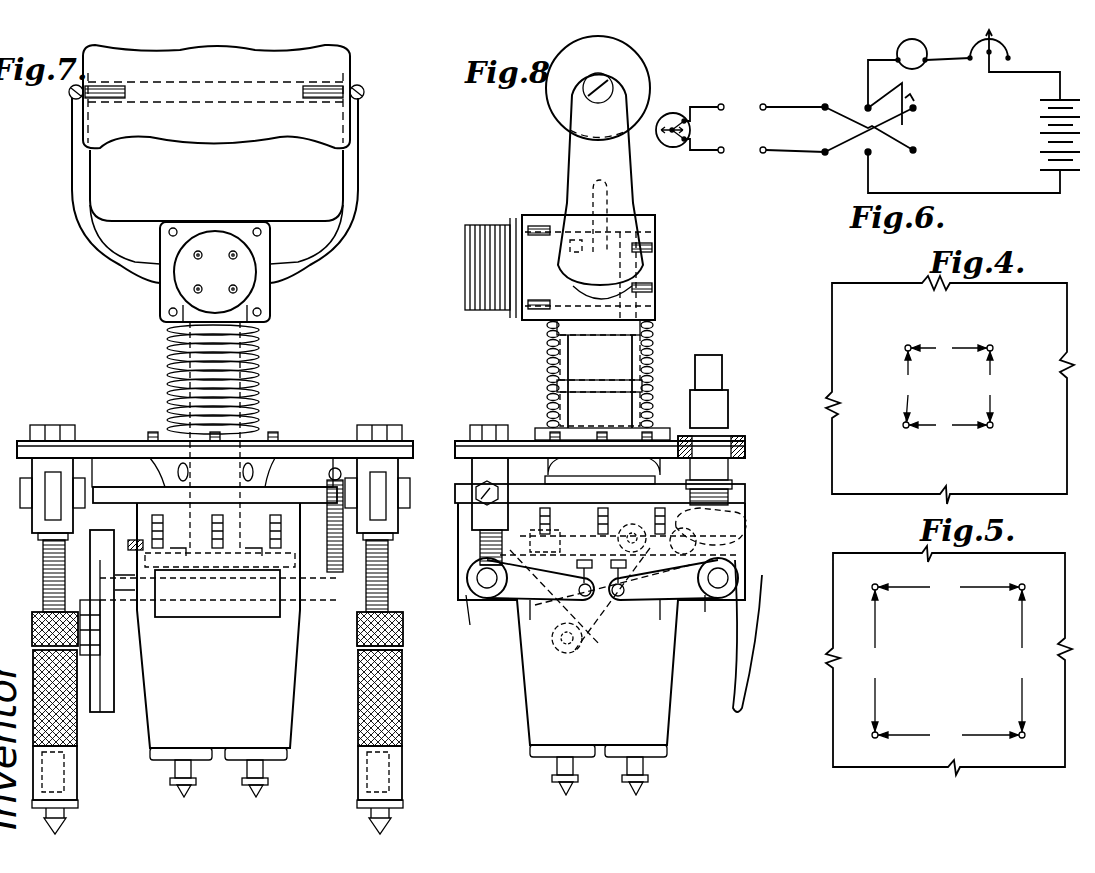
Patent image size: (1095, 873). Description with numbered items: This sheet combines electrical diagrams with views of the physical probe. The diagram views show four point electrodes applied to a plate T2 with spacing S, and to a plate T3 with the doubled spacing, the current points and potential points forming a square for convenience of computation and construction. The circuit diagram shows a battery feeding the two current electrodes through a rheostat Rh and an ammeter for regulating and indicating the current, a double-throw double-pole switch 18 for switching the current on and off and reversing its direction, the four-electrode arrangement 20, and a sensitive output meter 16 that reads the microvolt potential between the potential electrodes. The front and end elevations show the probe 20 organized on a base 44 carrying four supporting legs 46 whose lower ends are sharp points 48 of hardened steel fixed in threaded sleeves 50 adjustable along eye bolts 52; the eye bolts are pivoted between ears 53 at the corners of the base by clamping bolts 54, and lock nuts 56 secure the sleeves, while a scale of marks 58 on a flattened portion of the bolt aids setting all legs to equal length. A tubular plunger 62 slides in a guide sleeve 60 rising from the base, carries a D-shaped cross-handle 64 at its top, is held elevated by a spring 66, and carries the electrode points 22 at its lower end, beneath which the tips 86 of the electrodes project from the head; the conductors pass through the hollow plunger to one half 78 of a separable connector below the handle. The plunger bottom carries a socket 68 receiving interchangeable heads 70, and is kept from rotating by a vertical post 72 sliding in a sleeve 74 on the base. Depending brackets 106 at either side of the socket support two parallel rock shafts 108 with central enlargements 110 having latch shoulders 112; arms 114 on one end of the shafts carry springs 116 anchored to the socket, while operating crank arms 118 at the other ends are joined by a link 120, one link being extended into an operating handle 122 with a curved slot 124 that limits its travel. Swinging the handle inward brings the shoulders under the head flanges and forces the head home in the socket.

In FIG. 6, the output meter 16 is at (687, 120).
In FIG. 6, the double-throw double-pole switch 18 is at (941, 126).
In FIG. 7, the probe 20 is at (97, 370).
In FIG. 8, the probe 20 is at (484, 353).
In FIG. 6, the probe 20 is at (780, 176).
In FIG. 7, the electrode points 22 is at (245, 772).
In FIG. 8, the electrode points 22 is at (622, 763).
In FIG. 7, the base 44 is at (315, 448).
In FIG. 8, the base 44 is at (522, 440).
In FIG. 7, the supporting legs 46 is at (405, 645).
In FIG. 7, the sharp points 48 is at (65, 812).
In FIG. 7, the threaded sleeves 50 is at (70, 773).
In FIG. 7, the eye bolts 52 is at (45, 557).
In FIG. 8, the eye bolts 52 is at (480, 537).
In FIG. 7, the ears 53 is at (37, 470).
In FIG. 7, the clamping bolts 54 is at (28, 493).
In FIG. 8, the clamping bolts 54 is at (490, 494).
In FIG. 7, the lock nuts 56 is at (32, 625).
In FIG. 8, the scale of marks 58 is at (480, 550).
In FIG. 7, the guide sleeve 60 is at (257, 397).
In FIG. 8, the guide sleeve 60 is at (553, 392).
In FIG. 7, the plunger 62 is at (258, 345).
In FIG. 8, the plunger 62 is at (553, 353).
In FIG. 7, the cross-handle 64 is at (330, 124).
In FIG. 8, the cross-handle 64 is at (558, 108).
In FIG. 7, the spring 66 is at (258, 372).
In FIG. 8, the spring 66 is at (553, 372).
In FIG. 8, the socket 68 is at (532, 548).
In FIG. 7, the heads 70 is at (283, 703).
In FIG. 8, the heads 70 is at (672, 718).
In FIG. 8, the vertical post 72 is at (721, 373).
In FIG. 8, the sleeve 74 is at (721, 408).
In FIG. 8, the separable connector half 78 is at (555, 222).
In FIG. 7, the terminal pin 86 is at (175, 792).
In FIG. 8, the terminal pin 86 is at (563, 785).
In FIG. 7, the depending brackets 106 is at (143, 617).
In FIG. 8, the depending brackets 106 is at (738, 562).
In FIG. 7, the rock shafts 108 is at (200, 605).
In FIG. 8, the rock shafts 108 is at (740, 584).
In FIG. 7, the enlargements 110 is at (247, 607).
In FIG. 8, the enlargements 110 is at (693, 603).
In FIG. 8, the latch shoulder 112 is at (733, 560).
In FIG. 8, the arms 114 is at (537, 598).
In FIG. 7, the springs 116 is at (328, 517).
In FIG. 8, the springs 116 is at (590, 542).
In FIG. 8, the operating crank arms 118 is at (733, 550).
In FIG. 7, the link 120 is at (83, 588).
In FIG. 8, the link 120 is at (592, 639).
In FIG. 7, the operating handle 122 is at (105, 712).
In FIG. 8, the operating handle 122 is at (732, 637).
In FIG. 8, the curved slot 124 is at (733, 520).
In FIG. 6, the rheostat Rh is at (988, 100).
In FIG. 4, the plate T2 is at (888, 495).
In FIG. 5, the plate T3 is at (928, 768).